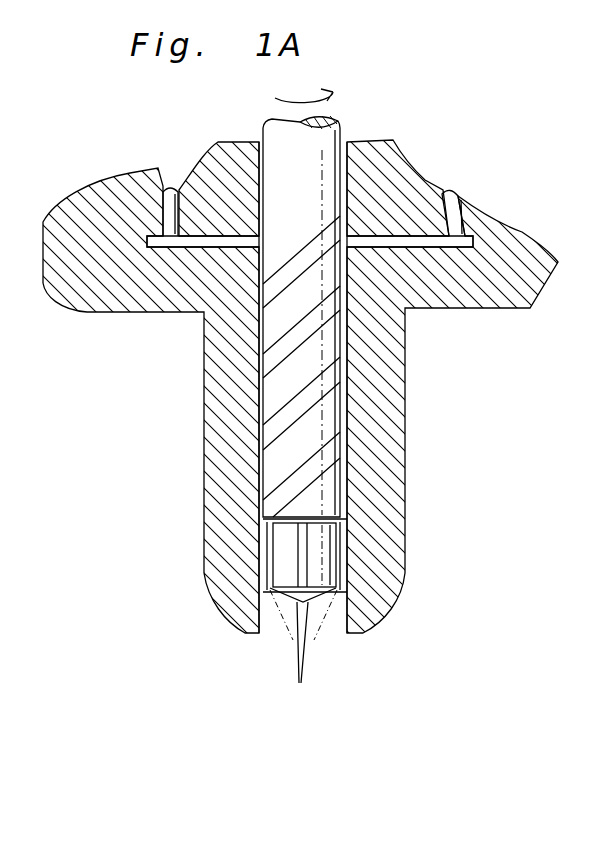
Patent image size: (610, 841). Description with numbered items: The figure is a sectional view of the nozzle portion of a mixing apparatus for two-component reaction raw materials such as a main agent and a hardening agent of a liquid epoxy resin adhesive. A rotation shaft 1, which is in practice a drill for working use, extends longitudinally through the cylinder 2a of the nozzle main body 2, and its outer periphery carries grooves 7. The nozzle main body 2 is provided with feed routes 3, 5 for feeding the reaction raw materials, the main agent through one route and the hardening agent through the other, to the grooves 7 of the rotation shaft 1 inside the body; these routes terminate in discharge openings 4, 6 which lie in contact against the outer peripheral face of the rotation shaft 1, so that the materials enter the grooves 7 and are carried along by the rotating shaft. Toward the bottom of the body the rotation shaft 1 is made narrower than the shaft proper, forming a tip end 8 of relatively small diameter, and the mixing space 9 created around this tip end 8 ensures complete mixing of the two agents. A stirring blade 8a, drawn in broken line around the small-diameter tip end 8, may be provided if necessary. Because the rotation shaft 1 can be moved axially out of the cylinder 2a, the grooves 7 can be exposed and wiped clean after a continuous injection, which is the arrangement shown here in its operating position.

The rotation shaft 1 is at (278, 138).
The nozzle main body 2 is at (380, 437).
The cylinder 2a is at (347, 363).
The feed route 3 is at (172, 212).
The discharge opening 4 is at (258, 243).
The feed route 5 is at (468, 237).
The discharge opening 6 is at (408, 307).
The grooves 7 is at (272, 284).
The tip end 8 is at (328, 553).
The stirring blade 8a is at (300, 683).
The mixing space 9 is at (347, 533).